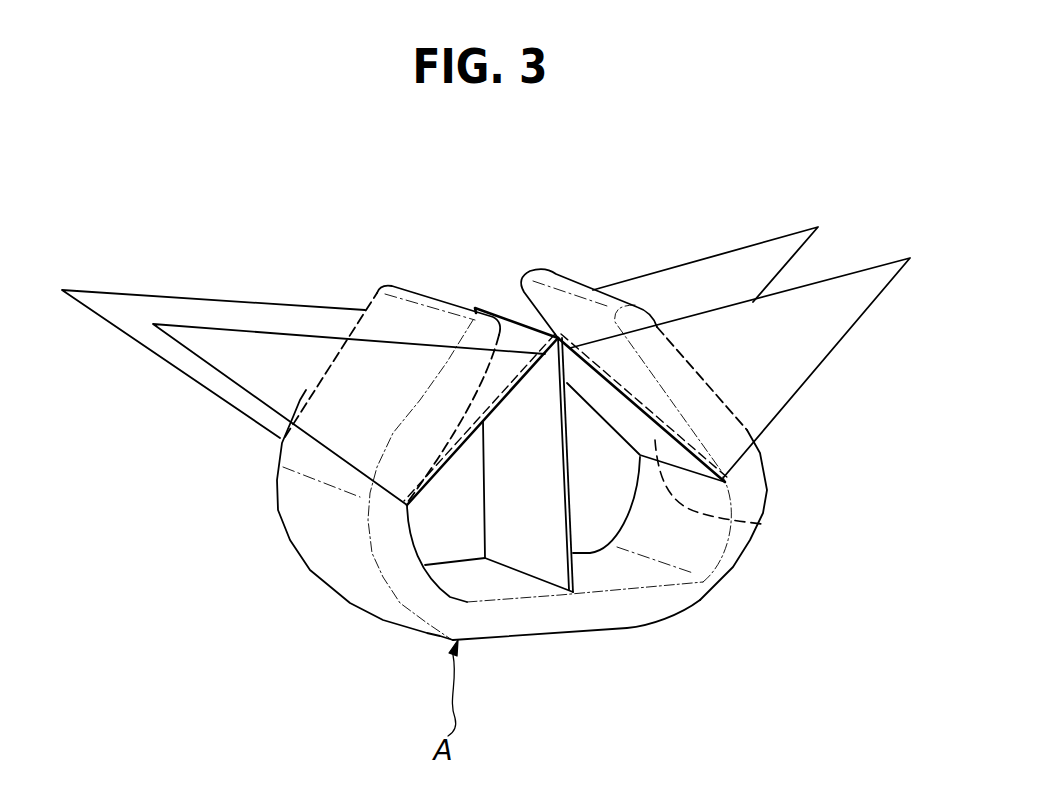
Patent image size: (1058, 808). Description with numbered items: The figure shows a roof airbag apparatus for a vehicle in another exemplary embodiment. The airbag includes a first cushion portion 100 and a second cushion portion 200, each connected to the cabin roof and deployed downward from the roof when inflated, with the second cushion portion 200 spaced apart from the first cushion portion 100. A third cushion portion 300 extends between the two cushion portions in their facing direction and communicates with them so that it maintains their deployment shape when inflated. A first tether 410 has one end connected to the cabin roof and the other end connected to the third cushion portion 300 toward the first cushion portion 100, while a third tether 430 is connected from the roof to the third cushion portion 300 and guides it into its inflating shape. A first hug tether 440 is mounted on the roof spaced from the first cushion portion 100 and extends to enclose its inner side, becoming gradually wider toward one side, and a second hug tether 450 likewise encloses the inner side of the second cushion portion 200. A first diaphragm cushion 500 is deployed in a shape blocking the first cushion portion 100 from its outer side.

The first cushion portion 100 is at (290, 482).
The second cushion portion 200 is at (763, 470).
The third cushion portion 300 is at (632, 610).
The first tether 410 is at (510, 337).
The third tether 430 is at (532, 543).
The first hug tether 440 is at (250, 343).
The second hug tether 450 is at (778, 312).
The first diaphragm cushion 500 is at (762, 524).